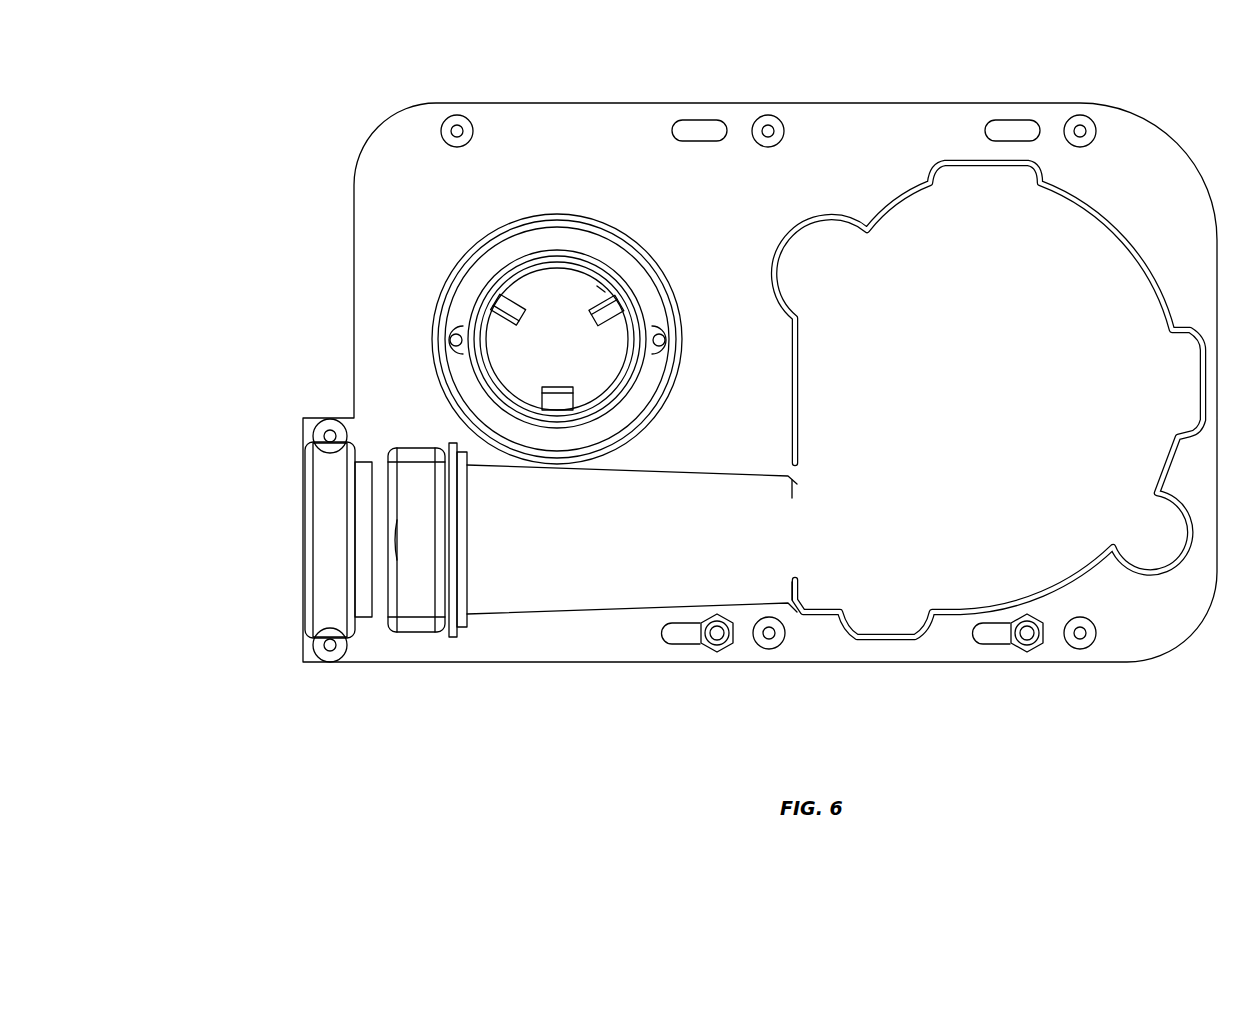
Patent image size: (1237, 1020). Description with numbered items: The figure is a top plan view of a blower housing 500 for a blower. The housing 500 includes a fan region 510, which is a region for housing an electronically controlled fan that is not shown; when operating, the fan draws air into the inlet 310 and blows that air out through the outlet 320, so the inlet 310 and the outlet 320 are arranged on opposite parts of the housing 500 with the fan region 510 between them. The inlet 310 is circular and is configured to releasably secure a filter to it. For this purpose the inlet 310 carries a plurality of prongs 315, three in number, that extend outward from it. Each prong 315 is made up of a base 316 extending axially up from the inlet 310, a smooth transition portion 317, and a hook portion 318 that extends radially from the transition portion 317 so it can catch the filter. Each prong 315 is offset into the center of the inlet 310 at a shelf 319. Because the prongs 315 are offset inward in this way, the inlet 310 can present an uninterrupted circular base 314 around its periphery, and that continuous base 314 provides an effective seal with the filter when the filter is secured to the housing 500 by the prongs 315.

The blower housing 500 is at (617, 103).
The fan region 510 is at (1013, 395).
The inlet 310 is at (570, 323).
The uninterrupted circular base 314 is at (527, 257).
The prong 315 is at (620, 303).
The base 316 is at (593, 400).
The smooth transition portion 317 is at (545, 404).
The hook portion 318 is at (520, 323).
The shelf 319 is at (604, 290).
The outlet 320 is at (305, 548).